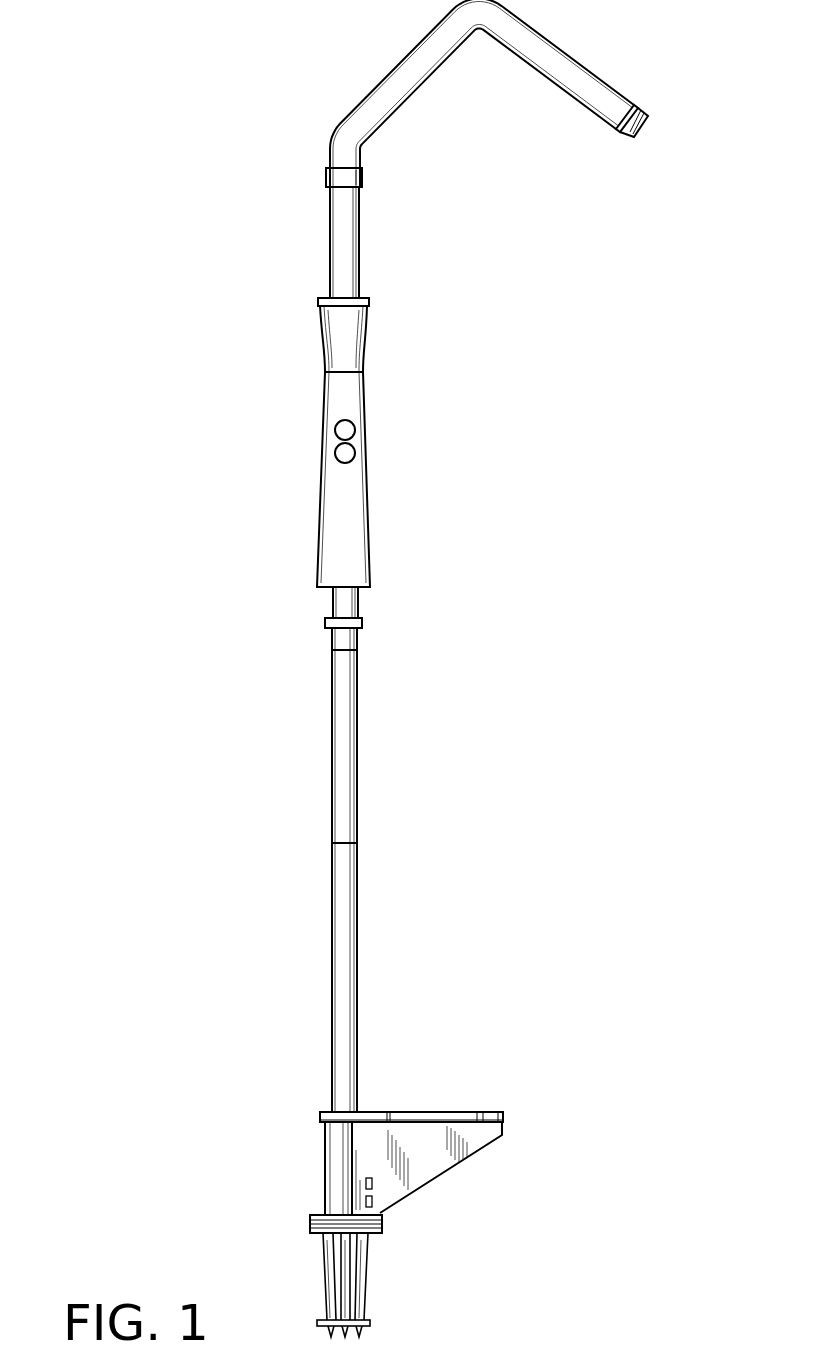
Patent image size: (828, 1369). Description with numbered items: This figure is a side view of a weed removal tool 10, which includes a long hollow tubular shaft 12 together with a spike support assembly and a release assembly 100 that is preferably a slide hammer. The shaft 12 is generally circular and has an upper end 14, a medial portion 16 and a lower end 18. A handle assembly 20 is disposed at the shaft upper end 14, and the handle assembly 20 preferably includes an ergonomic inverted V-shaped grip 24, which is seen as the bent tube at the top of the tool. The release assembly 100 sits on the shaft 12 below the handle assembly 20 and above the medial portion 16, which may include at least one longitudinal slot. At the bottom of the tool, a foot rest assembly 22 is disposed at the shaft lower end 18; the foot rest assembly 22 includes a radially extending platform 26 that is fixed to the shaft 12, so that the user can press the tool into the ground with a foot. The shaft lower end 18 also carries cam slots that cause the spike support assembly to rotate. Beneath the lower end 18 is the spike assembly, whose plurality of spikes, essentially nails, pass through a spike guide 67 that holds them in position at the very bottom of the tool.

The weed removal tool 10 is at (172, 190).
The shaft 12 is at (353, 777).
The upper end 14 is at (333, 255).
The medial portion 16 is at (330, 615).
The lower end 18 is at (327, 1183).
The handle assembly 20 is at (600, 80).
The foot rest assembly 22 is at (445, 1172).
The grip 24 is at (378, 90).
The platform 26 is at (415, 1112).
The spike guide 67 is at (370, 1312).
The release assembly 100 is at (278, 500).